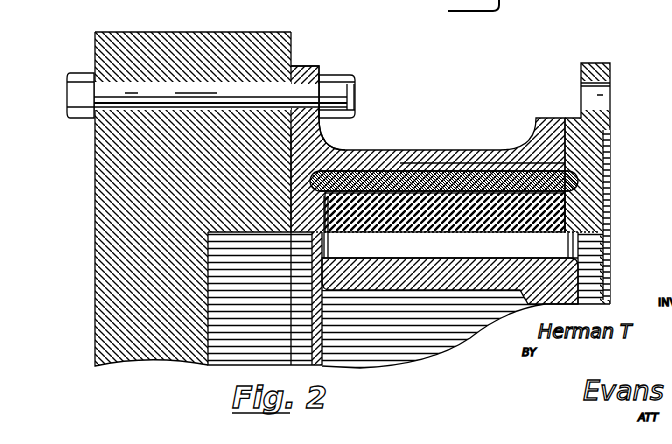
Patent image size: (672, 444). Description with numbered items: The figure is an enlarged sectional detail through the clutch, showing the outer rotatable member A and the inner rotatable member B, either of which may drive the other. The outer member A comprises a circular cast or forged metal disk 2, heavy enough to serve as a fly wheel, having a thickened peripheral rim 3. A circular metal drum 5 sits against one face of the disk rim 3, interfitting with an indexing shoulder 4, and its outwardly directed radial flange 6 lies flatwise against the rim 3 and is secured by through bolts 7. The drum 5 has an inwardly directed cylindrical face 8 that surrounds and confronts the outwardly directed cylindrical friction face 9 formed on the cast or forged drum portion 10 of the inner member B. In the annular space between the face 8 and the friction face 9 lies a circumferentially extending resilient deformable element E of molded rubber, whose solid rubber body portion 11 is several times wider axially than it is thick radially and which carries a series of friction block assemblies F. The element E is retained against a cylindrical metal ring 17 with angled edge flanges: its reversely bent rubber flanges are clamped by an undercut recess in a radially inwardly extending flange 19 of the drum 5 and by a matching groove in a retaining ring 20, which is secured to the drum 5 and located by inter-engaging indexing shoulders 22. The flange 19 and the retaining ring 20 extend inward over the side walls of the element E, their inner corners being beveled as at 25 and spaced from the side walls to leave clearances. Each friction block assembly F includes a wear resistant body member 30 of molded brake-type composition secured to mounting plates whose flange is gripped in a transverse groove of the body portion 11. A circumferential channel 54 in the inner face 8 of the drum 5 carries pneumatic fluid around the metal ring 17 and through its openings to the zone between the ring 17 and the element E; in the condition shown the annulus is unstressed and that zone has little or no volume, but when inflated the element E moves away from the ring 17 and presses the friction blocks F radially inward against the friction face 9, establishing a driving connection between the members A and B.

The disk 2 is at (94, 298).
The peripheral rim 3 is at (153, 32).
The indexing shoulder 4 is at (326, 133).
The drum 5 is at (418, 152).
The radial flange 6 is at (310, 67).
The through bolts 7 is at (356, 92).
The cylindrical face 8 is at (385, 171).
The friction face 9 is at (392, 250).
The drum portion 10 is at (428, 253).
The body portion 11 is at (499, 162).
The metal ring 17 is at (400, 171).
The radial flange 19 is at (296, 210).
The retaining ring 20 is at (596, 210).
The indexing shoulders 22 is at (565, 122).
The beveled inner corners 25 is at (326, 319).
The body member 30 is at (367, 243).
The channel or recess 54 is at (458, 170).
The outer rotatable member A is at (90, 239).
The inner rotatable member B is at (590, 291).
The resilient deformable element E is at (548, 213).
The friction block assemblies F is at (456, 338).